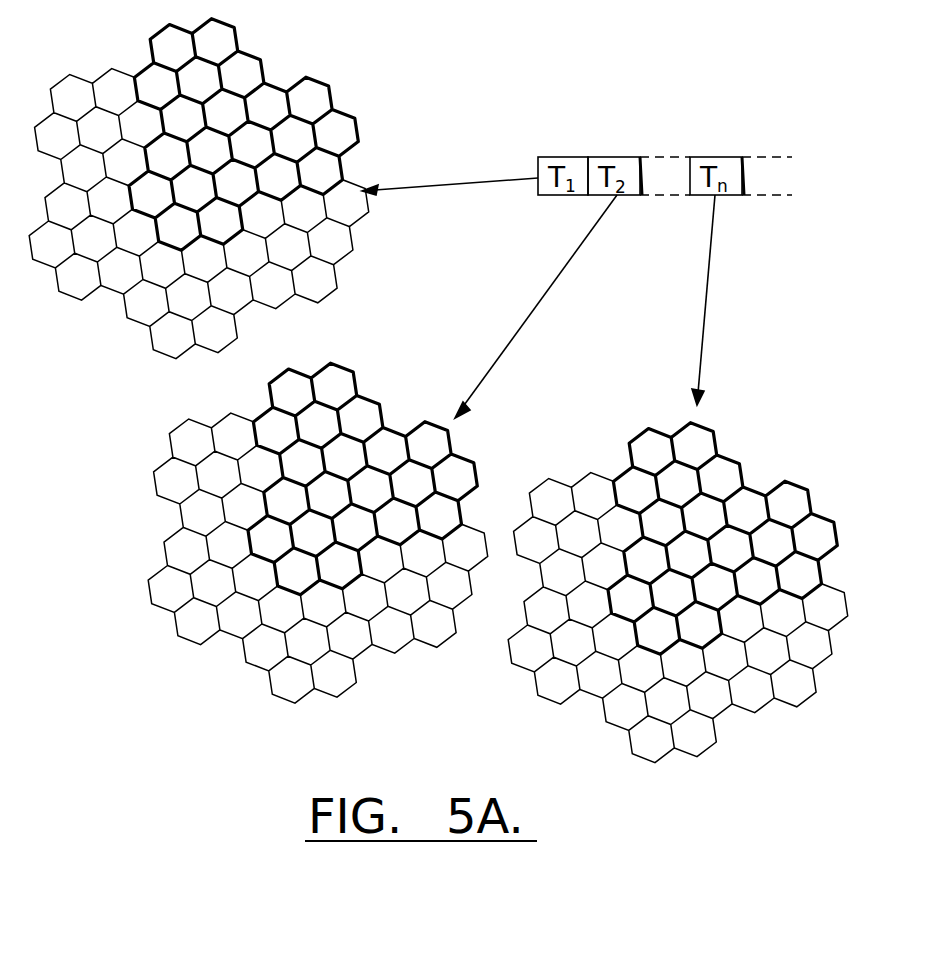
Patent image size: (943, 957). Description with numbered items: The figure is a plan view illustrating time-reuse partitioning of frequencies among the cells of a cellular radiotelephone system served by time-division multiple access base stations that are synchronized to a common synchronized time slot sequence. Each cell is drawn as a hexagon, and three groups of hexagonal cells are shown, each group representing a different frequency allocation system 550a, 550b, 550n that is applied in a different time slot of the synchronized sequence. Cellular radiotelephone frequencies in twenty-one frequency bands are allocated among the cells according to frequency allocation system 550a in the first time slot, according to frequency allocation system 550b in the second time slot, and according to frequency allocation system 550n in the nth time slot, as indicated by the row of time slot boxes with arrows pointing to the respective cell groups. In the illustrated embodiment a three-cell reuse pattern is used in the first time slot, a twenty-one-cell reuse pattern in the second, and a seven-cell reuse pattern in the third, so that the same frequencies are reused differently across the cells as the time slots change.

The frequency allocation system 550a is at (293, 57).
The frequency allocation system 550b is at (462, 442).
The frequency allocation system 550n is at (727, 438).